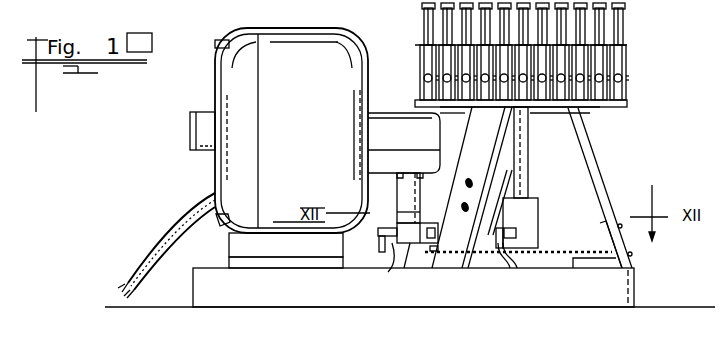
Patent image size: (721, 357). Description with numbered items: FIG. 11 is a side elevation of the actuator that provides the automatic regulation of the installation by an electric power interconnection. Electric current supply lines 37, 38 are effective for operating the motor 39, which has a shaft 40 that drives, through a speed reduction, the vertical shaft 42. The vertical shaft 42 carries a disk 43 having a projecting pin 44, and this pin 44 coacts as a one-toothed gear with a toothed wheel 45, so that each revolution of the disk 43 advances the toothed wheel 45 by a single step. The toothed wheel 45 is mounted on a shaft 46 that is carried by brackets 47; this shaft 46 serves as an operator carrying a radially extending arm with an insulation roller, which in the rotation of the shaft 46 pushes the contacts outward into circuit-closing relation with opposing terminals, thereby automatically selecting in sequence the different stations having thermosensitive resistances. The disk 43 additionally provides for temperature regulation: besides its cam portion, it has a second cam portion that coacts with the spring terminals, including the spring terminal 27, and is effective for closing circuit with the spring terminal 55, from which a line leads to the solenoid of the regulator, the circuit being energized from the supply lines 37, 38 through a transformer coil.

The spring terminal 27 is at (505, 226).
The electric current supply line 37 is at (128, 276).
The electric current supply line 38 is at (127, 298).
The motor 39 is at (235, 165).
The shaft 40 is at (190, 131).
The vertical shaft 42 is at (398, 218).
The disk 43 is at (378, 240).
The projecting pin 44 is at (388, 272).
The toothed wheel 45 is at (543, 253).
The shaft 46 is at (523, 172).
The brackets 47 is at (485, 145).
The spring terminal 55 is at (404, 268).